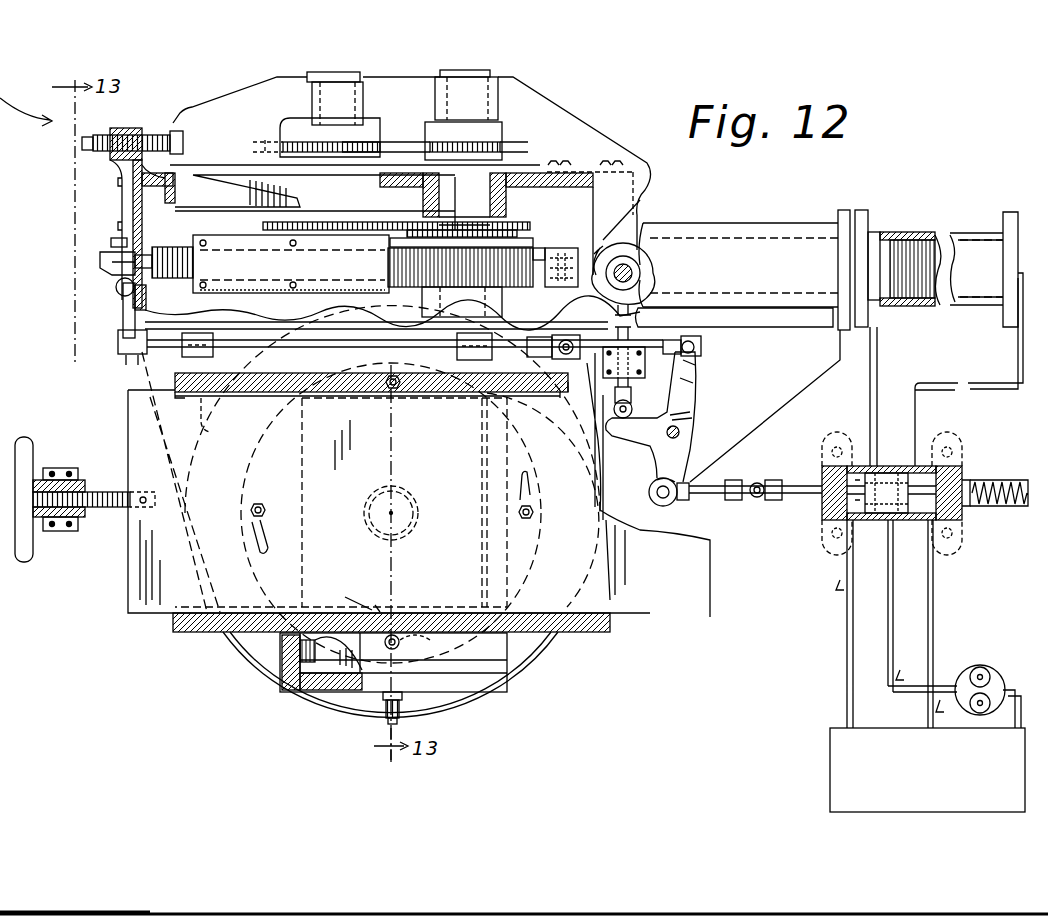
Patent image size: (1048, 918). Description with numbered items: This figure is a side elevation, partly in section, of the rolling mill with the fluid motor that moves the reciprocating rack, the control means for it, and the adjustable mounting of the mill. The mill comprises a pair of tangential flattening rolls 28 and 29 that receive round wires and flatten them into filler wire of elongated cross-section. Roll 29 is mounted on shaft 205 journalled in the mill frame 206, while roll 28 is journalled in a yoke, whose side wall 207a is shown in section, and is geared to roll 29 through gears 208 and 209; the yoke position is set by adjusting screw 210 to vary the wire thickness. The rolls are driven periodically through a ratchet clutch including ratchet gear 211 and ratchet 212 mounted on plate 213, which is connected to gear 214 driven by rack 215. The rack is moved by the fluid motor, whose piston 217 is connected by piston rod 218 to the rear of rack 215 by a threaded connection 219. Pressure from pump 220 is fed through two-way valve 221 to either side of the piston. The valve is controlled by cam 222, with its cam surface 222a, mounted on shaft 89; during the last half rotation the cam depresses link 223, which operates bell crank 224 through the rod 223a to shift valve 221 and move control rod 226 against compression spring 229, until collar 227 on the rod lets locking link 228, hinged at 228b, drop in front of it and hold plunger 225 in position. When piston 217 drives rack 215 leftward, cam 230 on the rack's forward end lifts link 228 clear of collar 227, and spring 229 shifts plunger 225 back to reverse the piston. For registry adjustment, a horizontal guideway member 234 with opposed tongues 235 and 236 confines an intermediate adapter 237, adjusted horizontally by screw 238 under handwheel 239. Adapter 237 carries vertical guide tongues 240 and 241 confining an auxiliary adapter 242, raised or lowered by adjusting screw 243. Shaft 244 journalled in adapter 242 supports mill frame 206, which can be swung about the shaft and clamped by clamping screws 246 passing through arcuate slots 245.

The tangential flattening roll 28 is at (340, 145).
The flattening roll 29 is at (415, 147).
The shaft 89 is at (640, 272).
The shaft 205 is at (490, 74).
The mill frame 206 is at (614, 177).
The side wall 207a is at (137, 193).
The gear 208 is at (263, 226).
The gear 209 is at (502, 232).
The adjusting screw 210 is at (160, 134).
The ratchet gear 211 is at (532, 242).
The ratchet 212 is at (466, 232).
The plate 213 is at (545, 256).
The gear 214 is at (455, 268).
The rack 215 is at (132, 242).
The piston 217 is at (898, 245).
The piston rod 218 is at (640, 200).
The threaded connection 219 is at (556, 284).
The pump 220 is at (985, 652).
The two-way valve 221 is at (962, 460).
The cam 222 is at (650, 282).
The cam 222a is at (640, 250).
The link 223 is at (650, 335).
The rod 223a is at (655, 322).
The bell crank 224 is at (692, 390).
The plunger 225 is at (884, 512).
The control rod 226 is at (262, 405).
The collar 227 is at (118, 343).
The link 228 is at (113, 324).
The hinge 228b is at (118, 296).
The compression spring 229 is at (990, 478).
The cam 230 is at (100, 257).
The horizontal guideway defining member 234 is at (165, 638).
The horizontal tongue 235 is at (227, 421).
The horizontal tongue 236 is at (182, 610).
The intermediate adapter member 237 is at (116, 573).
The screw 238 is at (108, 492).
The handwheel 239 is at (30, 448).
The guide tongue 240 is at (300, 660).
The guide tongue 241 is at (508, 670).
The auxiliary adapter member 242 is at (328, 662).
The adjusting screw 243 is at (385, 705).
The shaft 244 is at (405, 525).
The arcuate slot 245 is at (533, 518).
The clamping screw 246 is at (250, 508).